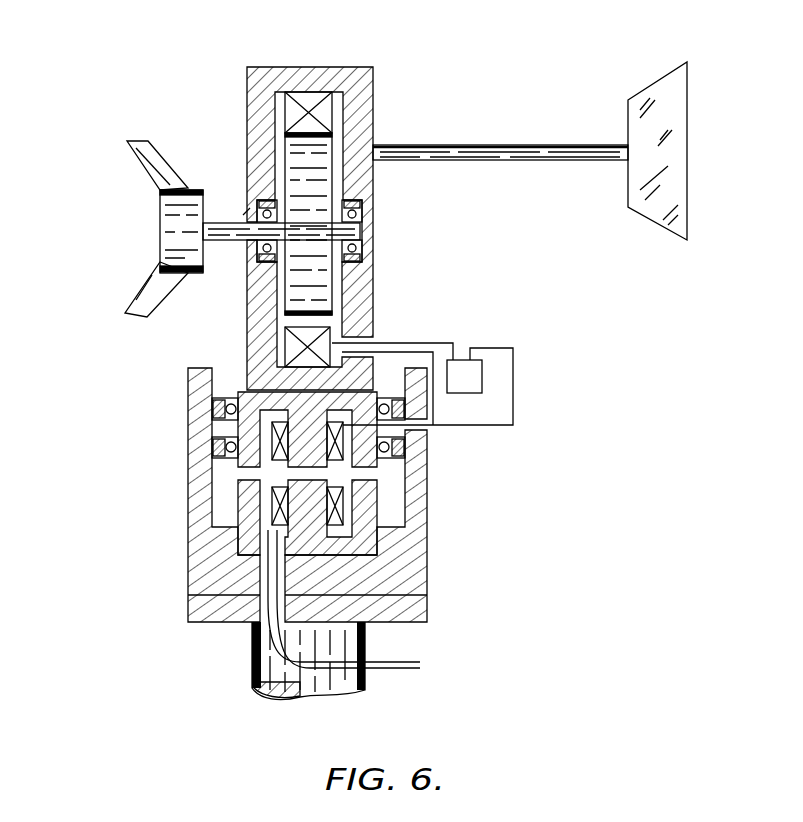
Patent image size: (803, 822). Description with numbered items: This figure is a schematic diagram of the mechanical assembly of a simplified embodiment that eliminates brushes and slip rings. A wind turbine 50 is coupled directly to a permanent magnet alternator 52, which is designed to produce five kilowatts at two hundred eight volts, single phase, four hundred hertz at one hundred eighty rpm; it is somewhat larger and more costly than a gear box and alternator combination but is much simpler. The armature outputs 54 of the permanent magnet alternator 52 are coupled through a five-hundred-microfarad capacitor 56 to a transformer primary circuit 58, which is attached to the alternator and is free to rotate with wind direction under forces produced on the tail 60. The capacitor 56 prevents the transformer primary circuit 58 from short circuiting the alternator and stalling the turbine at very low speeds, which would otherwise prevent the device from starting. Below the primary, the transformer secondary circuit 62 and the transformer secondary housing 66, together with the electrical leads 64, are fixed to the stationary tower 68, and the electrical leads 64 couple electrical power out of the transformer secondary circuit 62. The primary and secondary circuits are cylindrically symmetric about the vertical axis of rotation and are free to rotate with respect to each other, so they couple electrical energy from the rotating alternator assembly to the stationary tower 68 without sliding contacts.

The wind turbine 50 is at (114, 192).
The permanent magnet alternator 52 is at (356, 202).
The armature outputs 54 is at (476, 362).
The capacitor 56 is at (554, 376).
The transformer primary circuit 58 is at (343, 428).
The tail 60 is at (530, 151).
The transformer secondary circuit 62 is at (345, 510).
The electrical leads 64 is at (465, 599).
The transformer secondary housing 66 is at (459, 495).
The tower 68 is at (395, 661).